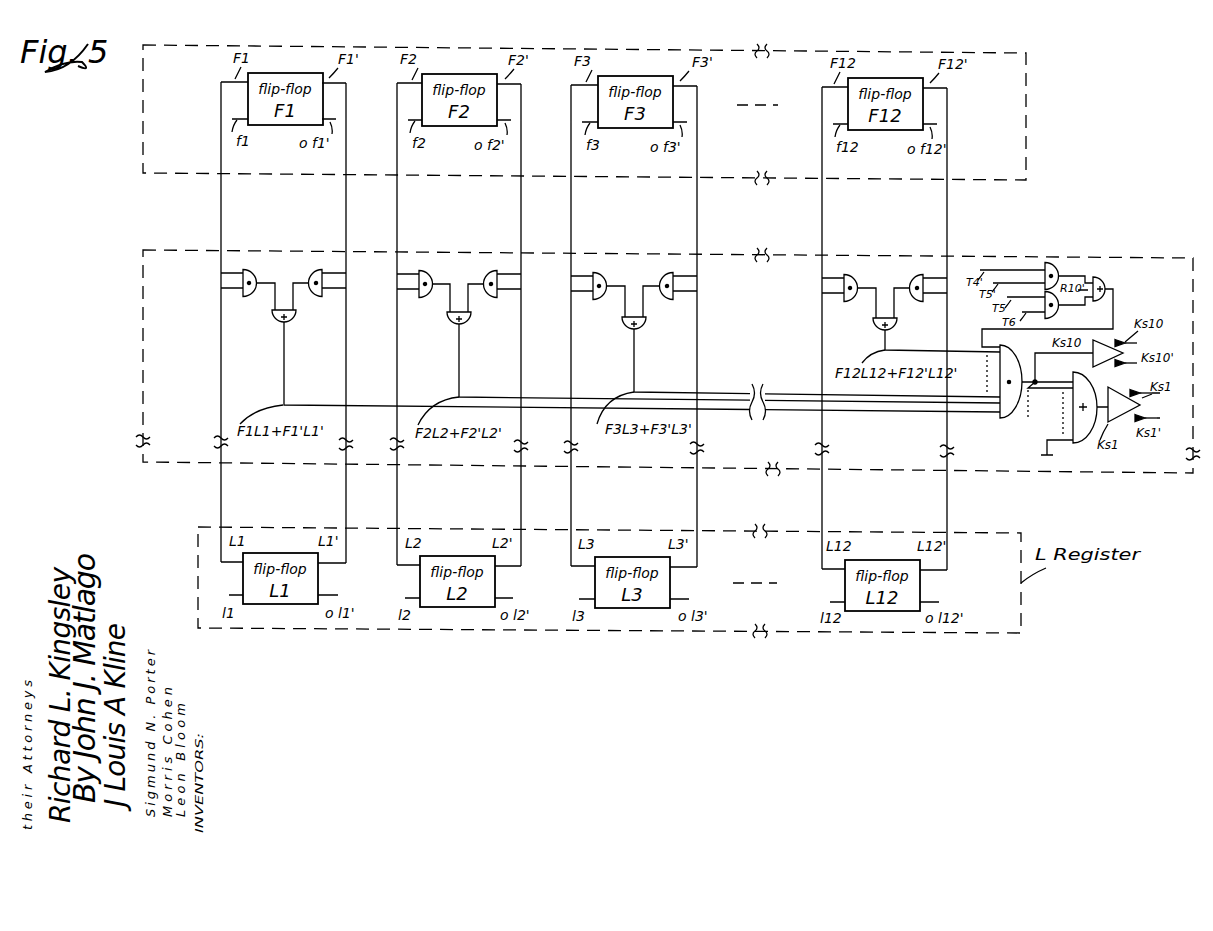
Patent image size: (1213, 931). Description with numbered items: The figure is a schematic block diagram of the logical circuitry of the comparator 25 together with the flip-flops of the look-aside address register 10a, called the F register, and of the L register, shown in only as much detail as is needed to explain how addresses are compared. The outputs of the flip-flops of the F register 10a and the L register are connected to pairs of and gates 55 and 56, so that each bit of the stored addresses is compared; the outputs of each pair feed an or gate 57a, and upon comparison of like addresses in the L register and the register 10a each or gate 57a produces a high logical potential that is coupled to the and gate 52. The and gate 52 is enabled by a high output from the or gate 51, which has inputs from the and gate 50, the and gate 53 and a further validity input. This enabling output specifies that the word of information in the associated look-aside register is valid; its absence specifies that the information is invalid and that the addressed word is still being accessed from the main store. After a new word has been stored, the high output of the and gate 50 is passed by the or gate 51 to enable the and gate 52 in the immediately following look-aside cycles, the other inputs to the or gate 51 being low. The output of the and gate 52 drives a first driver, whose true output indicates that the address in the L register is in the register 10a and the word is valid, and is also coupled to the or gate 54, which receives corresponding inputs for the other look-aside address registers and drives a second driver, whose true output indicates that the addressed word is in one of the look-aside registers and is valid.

The look-aside address register 10a is at (1026, 97).
The comparator 25 is at (1034, 257).
The and gate 55 is at (251, 271).
The and gate 56 is at (313, 297).
The or gate 57a is at (294, 319).
The and gate 53 is at (1057, 268).
The and gate 50 is at (1056, 313).
The or gate 51 is at (1110, 281).
The and gate 52 is at (1011, 418).
The or gate 54 is at (1082, 443).